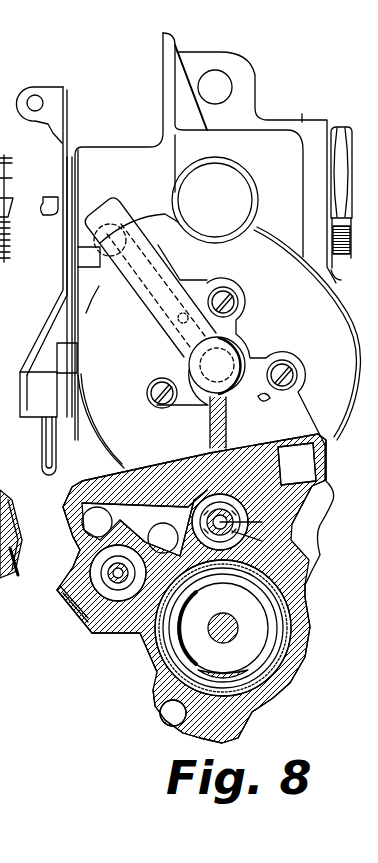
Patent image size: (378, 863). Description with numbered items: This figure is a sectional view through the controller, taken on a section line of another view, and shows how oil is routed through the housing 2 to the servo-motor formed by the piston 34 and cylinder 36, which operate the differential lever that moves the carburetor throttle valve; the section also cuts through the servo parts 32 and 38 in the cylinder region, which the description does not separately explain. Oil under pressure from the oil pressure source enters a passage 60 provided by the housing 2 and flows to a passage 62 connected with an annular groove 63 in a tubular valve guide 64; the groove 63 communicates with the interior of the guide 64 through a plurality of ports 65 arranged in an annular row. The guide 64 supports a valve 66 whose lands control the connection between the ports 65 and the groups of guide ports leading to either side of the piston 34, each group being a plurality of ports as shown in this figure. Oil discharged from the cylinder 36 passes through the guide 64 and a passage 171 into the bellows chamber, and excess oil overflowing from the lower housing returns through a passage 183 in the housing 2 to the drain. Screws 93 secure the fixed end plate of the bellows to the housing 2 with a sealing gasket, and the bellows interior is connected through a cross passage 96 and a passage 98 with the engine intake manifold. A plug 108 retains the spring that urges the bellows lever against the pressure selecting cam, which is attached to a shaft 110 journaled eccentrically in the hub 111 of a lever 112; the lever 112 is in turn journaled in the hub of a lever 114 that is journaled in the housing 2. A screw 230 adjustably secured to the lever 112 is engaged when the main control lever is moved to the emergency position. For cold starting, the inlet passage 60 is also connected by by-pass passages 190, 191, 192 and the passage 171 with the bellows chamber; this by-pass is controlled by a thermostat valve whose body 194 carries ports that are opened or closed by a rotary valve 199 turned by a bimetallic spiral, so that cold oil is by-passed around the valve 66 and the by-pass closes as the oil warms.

The housing 2 is at (306, 114).
The shaft 32 is at (224, 610).
The piston 34 is at (284, 613).
The cylinder 36 is at (287, 670).
The bearing race 38 is at (270, 650).
The passage 60 is at (4, 500).
The passage 62 is at (150, 480).
The annular groove 63 is at (224, 506).
The tubular valve guide 64 is at (288, 551).
The ports 65 is at (262, 523).
The valve 66 is at (258, 505).
The screws 93 is at (235, 292).
The cross passage 96 is at (178, 276).
The passage 98 is at (150, 252).
The plug 108 is at (232, 180).
The shaft 110 is at (53, 197).
The hub 111 is at (17, 208).
The lever 112 is at (42, 328).
The lever 114 is at (57, 460).
The passage 171 is at (168, 528).
The passage 183 is at (165, 712).
The passage 190 is at (14, 562).
The passage 191 is at (78, 608).
The passage 192 is at (148, 530).
The body 194 is at (117, 597).
The rotary valve 199 is at (130, 587).
The screw 230 is at (37, 94).